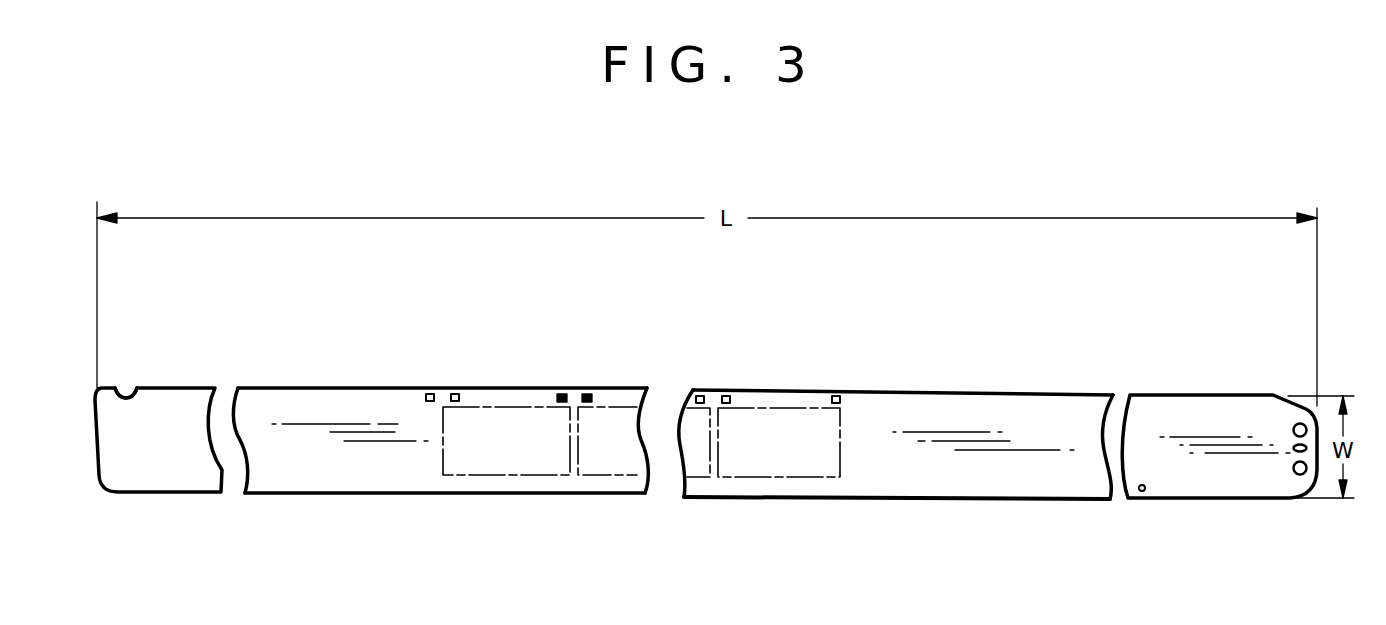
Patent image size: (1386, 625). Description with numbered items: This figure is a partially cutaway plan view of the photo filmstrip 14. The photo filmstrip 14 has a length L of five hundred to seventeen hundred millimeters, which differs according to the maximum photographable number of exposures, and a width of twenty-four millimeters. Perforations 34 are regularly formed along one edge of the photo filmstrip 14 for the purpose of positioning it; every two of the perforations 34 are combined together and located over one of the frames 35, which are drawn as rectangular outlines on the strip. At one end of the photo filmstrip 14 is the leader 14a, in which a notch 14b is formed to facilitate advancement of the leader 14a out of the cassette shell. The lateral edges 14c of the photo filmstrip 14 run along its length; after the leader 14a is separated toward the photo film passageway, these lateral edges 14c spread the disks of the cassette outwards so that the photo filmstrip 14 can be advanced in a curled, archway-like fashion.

The photo filmstrip 14 is at (863, 390).
The leader 14a is at (173, 467).
The notch 14b is at (126, 392).
The lateral edges 14c is at (310, 386).
The perforations 34 is at (563, 392).
The frames 35 is at (498, 477).